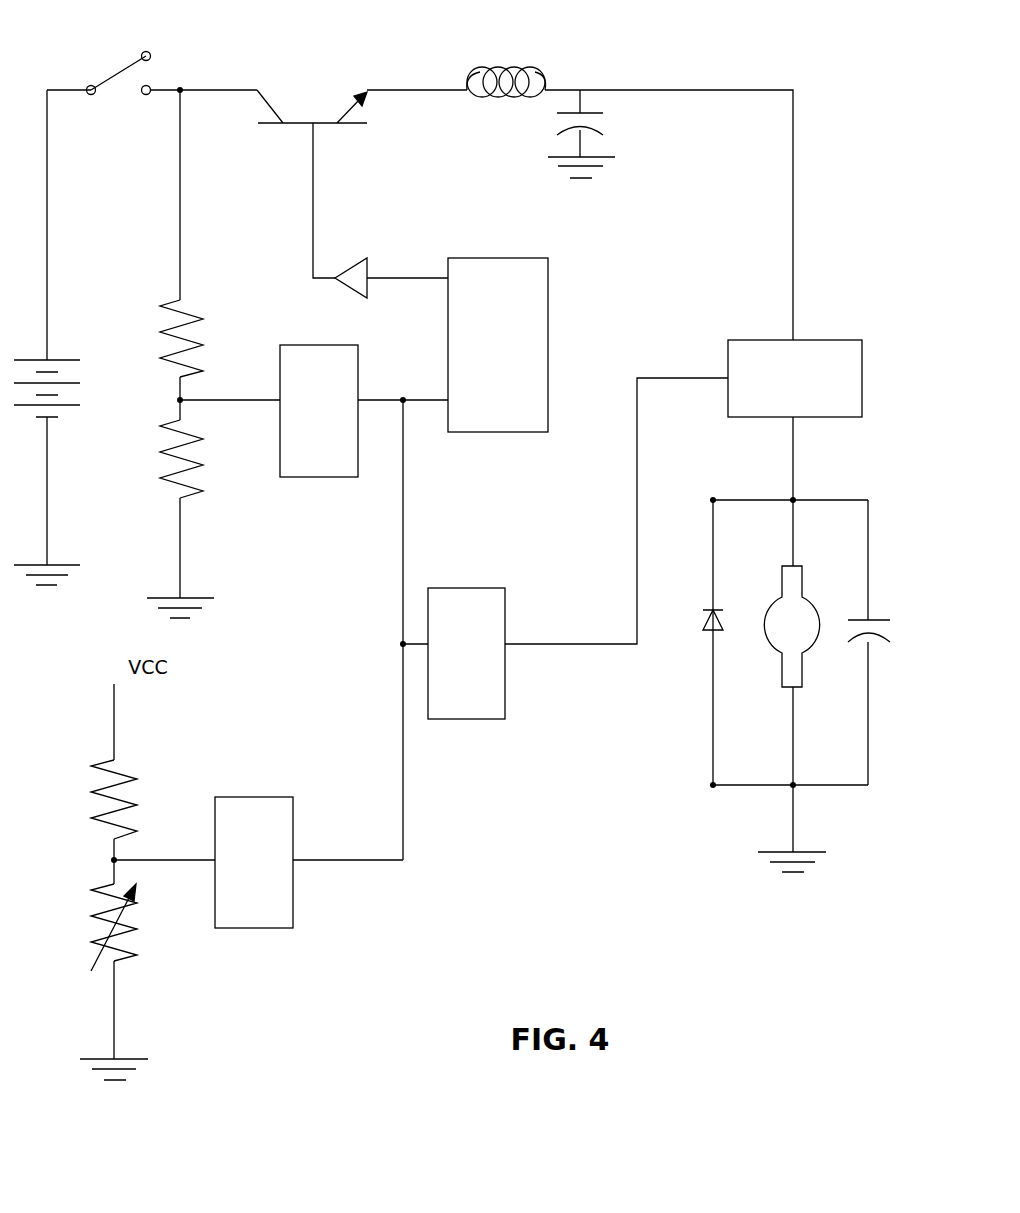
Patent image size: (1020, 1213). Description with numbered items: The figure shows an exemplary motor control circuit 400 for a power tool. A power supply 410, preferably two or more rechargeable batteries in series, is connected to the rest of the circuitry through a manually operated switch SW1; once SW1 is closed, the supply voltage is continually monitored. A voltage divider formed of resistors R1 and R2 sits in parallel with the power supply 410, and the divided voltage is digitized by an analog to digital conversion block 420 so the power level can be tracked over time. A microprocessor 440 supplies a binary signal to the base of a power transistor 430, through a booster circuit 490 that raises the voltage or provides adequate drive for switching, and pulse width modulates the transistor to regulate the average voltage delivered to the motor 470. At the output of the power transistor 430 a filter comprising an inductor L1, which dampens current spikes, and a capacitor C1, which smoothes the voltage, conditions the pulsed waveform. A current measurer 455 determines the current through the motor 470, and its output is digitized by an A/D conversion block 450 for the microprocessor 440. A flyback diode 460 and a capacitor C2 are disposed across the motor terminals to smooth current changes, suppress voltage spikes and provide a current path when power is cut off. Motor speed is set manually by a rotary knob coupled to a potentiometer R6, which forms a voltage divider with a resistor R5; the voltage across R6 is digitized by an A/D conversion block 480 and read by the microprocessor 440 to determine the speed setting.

The circuit 400 is at (740, 64).
The power supply 410 is at (68, 355).
The analog to digital conversion block 420 is at (295, 477).
The power transistor 430 is at (337, 123).
The microprocessor 440 is at (518, 258).
The A/D conversion block 450 is at (436, 719).
The current measurer 455 is at (826, 340).
The flyback diode 460 is at (700, 648).
The motor 470 is at (818, 640).
The A/D conversion block 480 is at (252, 797).
The booster circuit 490 is at (348, 268).
The manually operated switch SW1 is at (113, 100).
The resistor R1 is at (190, 312).
The resistor R2 is at (190, 498).
The resistor R5 is at (125, 768).
The potentiometer R6 is at (123, 952).
The inductor L1 is at (500, 107).
The capacitor C1 is at (603, 125).
The capacitor C2 is at (880, 612).